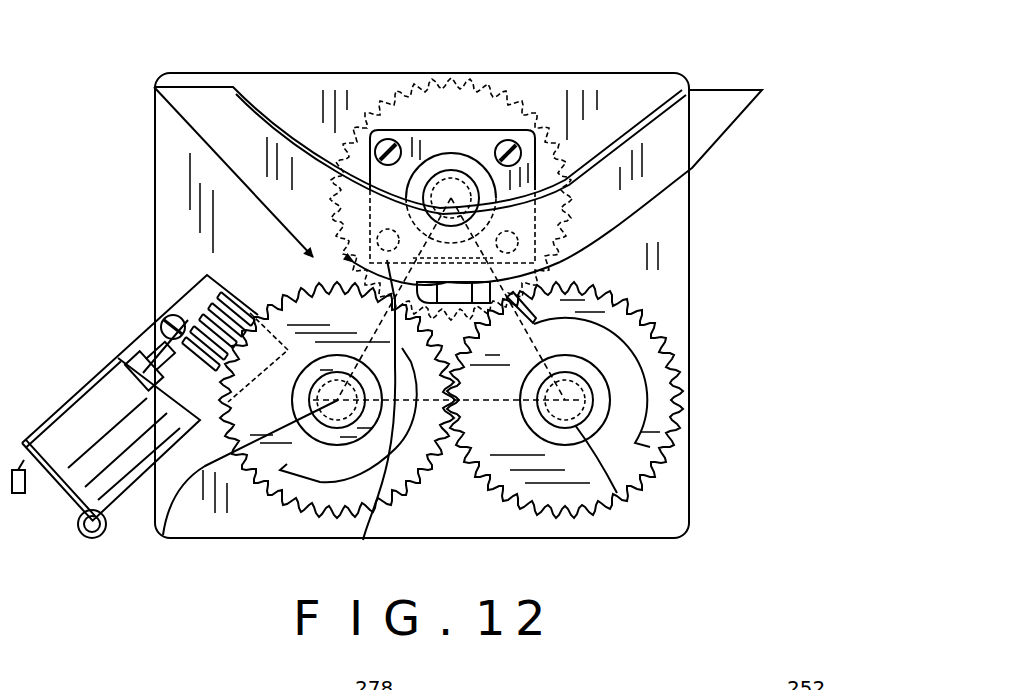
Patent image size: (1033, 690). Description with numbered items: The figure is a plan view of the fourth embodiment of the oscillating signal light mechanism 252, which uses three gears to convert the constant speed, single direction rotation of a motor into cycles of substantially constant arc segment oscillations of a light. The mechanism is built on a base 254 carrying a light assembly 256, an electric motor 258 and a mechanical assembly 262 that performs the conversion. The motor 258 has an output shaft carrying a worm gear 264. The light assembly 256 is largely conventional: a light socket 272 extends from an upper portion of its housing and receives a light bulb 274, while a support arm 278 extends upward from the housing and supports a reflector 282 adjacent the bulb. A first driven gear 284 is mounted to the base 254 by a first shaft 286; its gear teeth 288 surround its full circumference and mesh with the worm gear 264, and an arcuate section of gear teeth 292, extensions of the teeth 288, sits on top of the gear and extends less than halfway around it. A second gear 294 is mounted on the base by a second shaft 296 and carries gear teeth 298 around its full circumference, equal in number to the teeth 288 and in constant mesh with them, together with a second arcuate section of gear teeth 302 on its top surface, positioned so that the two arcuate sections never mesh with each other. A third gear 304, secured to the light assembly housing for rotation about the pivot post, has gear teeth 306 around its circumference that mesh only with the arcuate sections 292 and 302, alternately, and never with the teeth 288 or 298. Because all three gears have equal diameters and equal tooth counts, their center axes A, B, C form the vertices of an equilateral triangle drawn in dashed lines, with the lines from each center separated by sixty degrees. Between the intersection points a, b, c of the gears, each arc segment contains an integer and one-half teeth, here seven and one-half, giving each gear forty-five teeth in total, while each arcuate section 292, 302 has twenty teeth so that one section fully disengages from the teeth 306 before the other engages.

The oscillating signal light mechanism 252 is at (698, 47).
The base 254 is at (297, 103).
The light assembly 256 is at (592, 145).
The electric motor 258 is at (97, 417).
The mechanical assembly 262 is at (650, 308).
The worm gear 264 is at (185, 300).
The light socket 272 is at (550, 130).
The light bulb 274 is at (447, 195).
The support arm 278 is at (497, 265).
The reflector 282 is at (693, 130).
The first driven gear 284 is at (163, 535).
The first shaft 286 is at (338, 400).
The gear teeth of first gear 288 is at (277, 280).
The first arcuate section of gear teeth 292 is at (417, 435).
The second gear 294 is at (563, 487).
The second shaft 296 is at (617, 493).
The gear teeth of second gear 298 is at (533, 515).
The second arcuate section of gear teeth 302 is at (655, 447).
The third gear 304 is at (487, 112).
The gear teeth of third gear 306 is at (353, 262).
The center axis of first gear A is at (338, 400).
The center axis of second gear B is at (567, 400).
The center axis of third gear C is at (452, 196).
The intersection point a is at (363, 540).
The intersection point b is at (535, 325).
The intersection point c is at (457, 407).